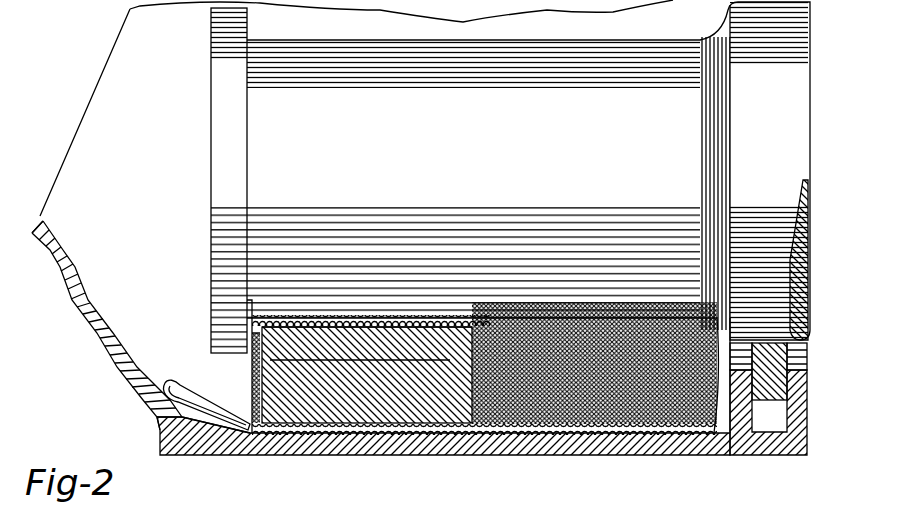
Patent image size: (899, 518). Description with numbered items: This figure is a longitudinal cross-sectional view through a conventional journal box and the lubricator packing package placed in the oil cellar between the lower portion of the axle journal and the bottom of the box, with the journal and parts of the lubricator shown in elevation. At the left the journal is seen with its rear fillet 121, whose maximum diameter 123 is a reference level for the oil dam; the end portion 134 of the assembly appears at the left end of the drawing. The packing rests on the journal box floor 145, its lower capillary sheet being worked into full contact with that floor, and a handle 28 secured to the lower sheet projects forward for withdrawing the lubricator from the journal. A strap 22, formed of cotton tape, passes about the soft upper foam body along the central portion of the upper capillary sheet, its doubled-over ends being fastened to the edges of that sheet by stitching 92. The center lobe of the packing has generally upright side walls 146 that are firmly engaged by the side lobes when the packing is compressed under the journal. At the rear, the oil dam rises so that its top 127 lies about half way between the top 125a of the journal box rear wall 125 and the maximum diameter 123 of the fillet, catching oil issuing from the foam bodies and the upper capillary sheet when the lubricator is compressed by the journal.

The left end flange 134 is at (220, 173).
The journal rear fillet 121 is at (717, 87).
The maximum diameter 123 is at (727, 158).
The side walls 146 is at (733, 272).
The stitching 92 is at (247, 308).
The strap 22 is at (256, 356).
The handle 28 is at (168, 373).
The journal box floor 145 is at (627, 450).
The top 127 is at (712, 435).
The journal box rear wall 125 is at (736, 400).
The top 125a is at (753, 400).